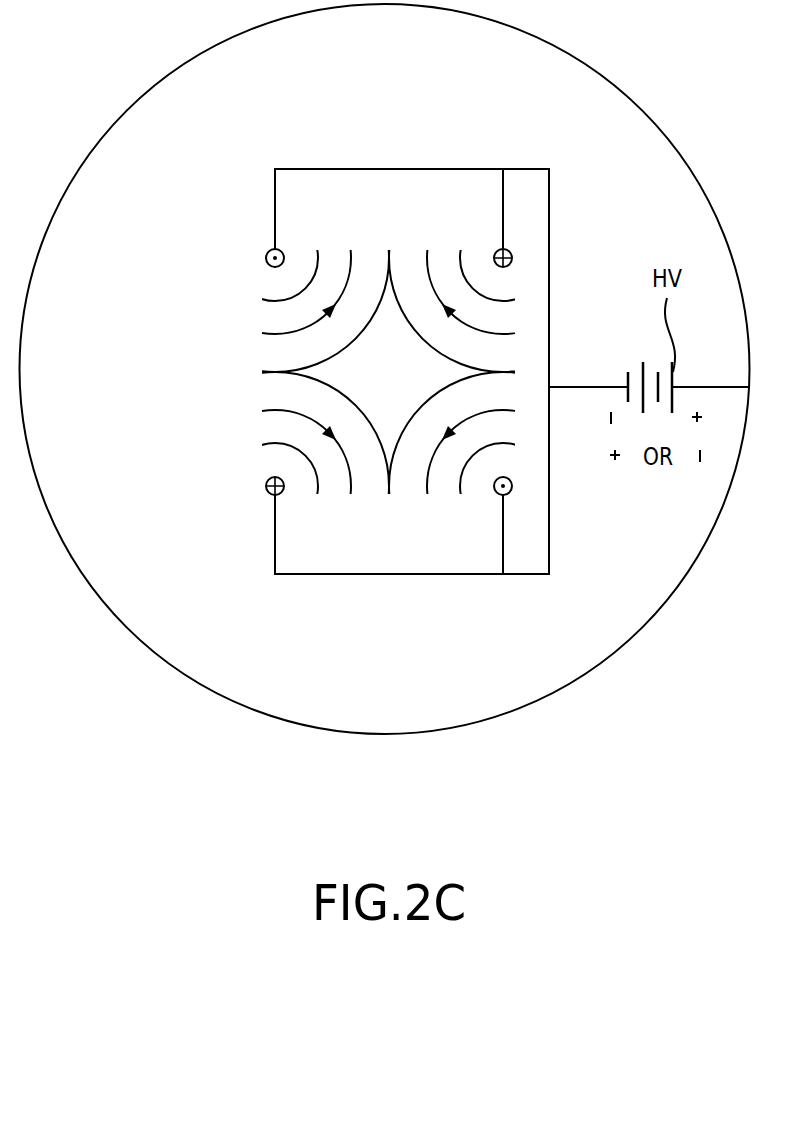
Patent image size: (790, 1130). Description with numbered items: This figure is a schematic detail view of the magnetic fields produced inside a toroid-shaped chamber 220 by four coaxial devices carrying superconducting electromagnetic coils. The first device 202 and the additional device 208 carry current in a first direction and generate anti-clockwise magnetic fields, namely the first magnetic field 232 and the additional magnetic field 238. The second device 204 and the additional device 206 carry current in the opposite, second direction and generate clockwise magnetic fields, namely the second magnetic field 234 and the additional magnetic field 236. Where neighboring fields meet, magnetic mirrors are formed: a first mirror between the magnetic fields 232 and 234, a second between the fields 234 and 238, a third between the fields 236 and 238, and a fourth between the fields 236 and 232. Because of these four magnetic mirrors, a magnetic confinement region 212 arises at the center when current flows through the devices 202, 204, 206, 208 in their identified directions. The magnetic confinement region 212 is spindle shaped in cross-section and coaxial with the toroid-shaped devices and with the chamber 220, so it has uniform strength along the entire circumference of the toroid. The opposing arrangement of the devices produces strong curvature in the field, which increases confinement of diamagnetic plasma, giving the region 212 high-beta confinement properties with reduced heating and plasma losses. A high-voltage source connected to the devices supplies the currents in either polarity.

The chamber 220 is at (135, 100).
The second device 204 is at (270, 250).
The first device 202 is at (511, 252).
The additional device 208 is at (266, 484).
The additional device 206 is at (495, 490).
The magnetic confinement region 212 is at (389, 372).
The second magnetic field 234 is at (275, 258).
The first magnetic field 232 is at (503, 258).
The additional magnetic field 238 is at (275, 486).
The additional magnetic field 236 is at (503, 486).